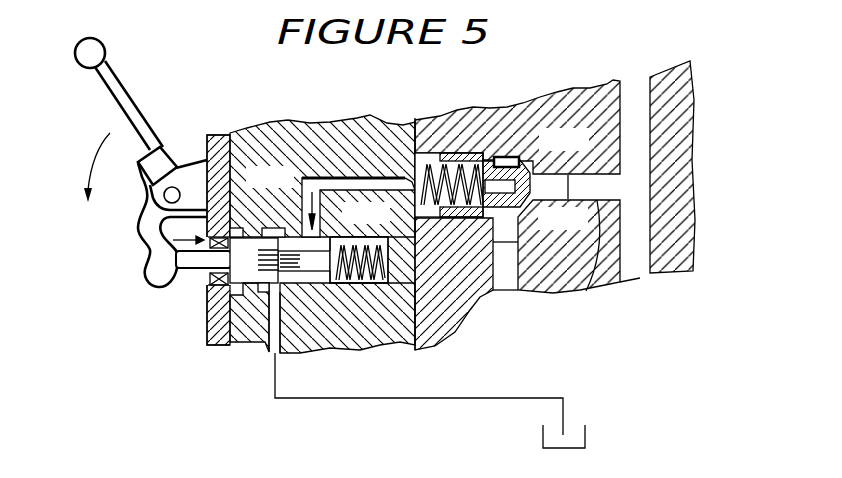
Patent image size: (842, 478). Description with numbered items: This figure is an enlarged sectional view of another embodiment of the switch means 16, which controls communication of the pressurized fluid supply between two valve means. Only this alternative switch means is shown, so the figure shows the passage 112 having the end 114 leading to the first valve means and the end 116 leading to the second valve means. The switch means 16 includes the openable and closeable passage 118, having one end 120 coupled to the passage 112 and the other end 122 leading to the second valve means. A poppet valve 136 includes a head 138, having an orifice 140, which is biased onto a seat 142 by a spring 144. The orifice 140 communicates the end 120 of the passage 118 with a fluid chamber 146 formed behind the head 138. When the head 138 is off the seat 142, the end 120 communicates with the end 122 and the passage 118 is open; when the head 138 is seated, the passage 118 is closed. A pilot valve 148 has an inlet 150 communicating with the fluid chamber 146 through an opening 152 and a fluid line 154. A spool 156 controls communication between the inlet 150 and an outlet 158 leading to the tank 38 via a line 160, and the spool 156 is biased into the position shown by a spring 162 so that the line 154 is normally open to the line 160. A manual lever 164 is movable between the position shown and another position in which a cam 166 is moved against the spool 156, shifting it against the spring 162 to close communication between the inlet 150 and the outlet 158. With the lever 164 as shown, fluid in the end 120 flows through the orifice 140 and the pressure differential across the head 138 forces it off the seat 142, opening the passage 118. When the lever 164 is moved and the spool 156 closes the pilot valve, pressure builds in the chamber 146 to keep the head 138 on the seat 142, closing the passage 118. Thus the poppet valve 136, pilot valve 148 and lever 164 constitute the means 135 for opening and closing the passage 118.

The switch means 16 is at (206, 100).
The tank 38 is at (587, 428).
The passage 112 is at (646, 180).
The end 114 is at (646, 98).
The end 116 is at (646, 245).
The openable and closeable passage 118 is at (510, 267).
The one end 120 is at (588, 176).
The other end 122 is at (508, 293).
The means for opening and closing passage 135 is at (300, 98).
The poppet valve 136 is at (508, 138).
The head 138 is at (542, 180).
The orifice 140 is at (517, 139).
The seat 142 is at (531, 188).
The spring 144 is at (474, 160).
The fluid chamber 146 is at (446, 165).
The pilot valve 148 is at (255, 146).
The inlet 150 is at (322, 230).
The opening 152 is at (403, 177).
The fluid line 154 is at (305, 190).
The spool 156 is at (222, 291).
The outlet 158 is at (264, 291).
The line 160 is at (462, 398).
The spring 162 is at (378, 343).
The manual lever 164 is at (124, 110).
The cam 166 is at (143, 262).